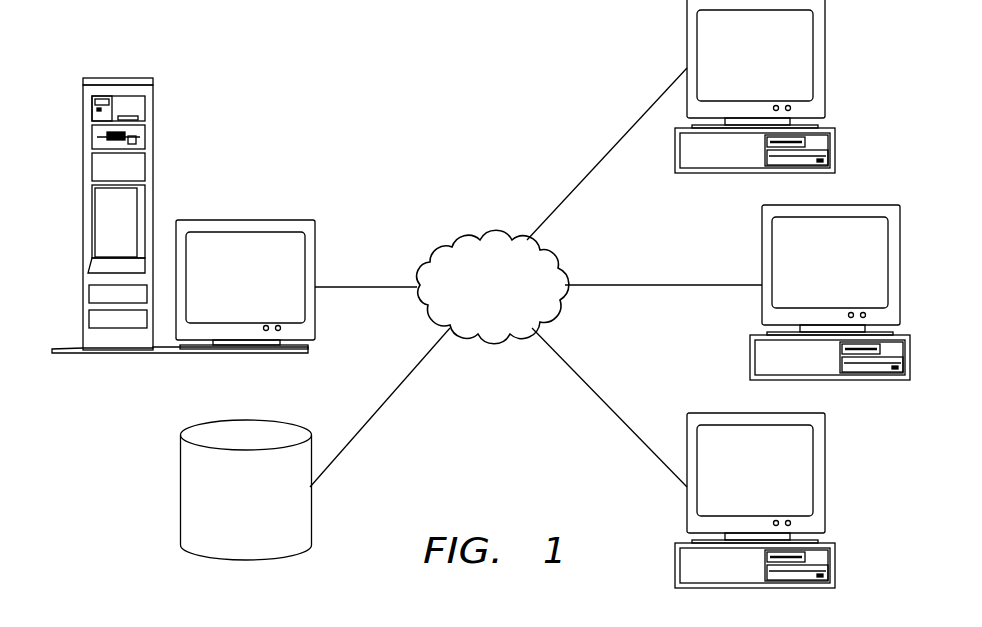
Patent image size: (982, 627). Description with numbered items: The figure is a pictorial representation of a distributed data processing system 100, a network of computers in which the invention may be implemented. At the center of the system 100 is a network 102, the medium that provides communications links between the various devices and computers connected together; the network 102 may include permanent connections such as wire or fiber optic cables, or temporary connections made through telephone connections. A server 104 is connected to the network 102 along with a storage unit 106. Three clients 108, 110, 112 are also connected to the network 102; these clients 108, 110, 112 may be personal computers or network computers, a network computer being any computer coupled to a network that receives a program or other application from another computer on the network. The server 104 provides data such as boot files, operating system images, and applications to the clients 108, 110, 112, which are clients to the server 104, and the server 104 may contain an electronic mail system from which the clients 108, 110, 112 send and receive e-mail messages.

The distributed data processing system 100 is at (388, 51).
The network 102 is at (469, 313).
The server 104 is at (225, 285).
The storage unit 106 is at (225, 532).
The client 108 is at (755, 100).
The client 110 is at (830, 306).
The client 112 is at (755, 514).